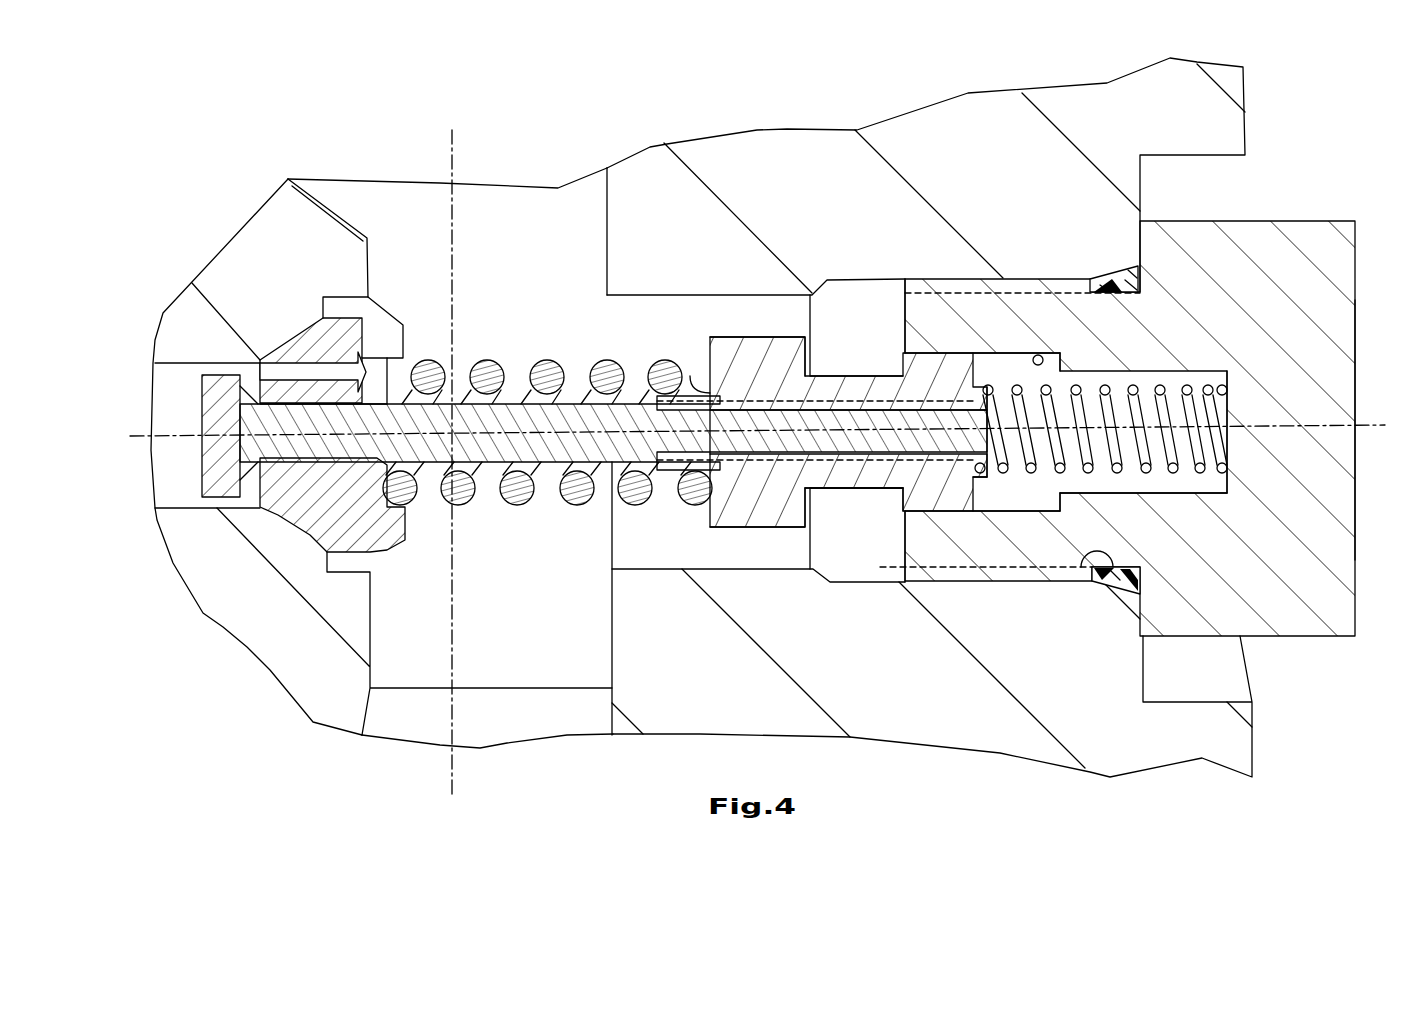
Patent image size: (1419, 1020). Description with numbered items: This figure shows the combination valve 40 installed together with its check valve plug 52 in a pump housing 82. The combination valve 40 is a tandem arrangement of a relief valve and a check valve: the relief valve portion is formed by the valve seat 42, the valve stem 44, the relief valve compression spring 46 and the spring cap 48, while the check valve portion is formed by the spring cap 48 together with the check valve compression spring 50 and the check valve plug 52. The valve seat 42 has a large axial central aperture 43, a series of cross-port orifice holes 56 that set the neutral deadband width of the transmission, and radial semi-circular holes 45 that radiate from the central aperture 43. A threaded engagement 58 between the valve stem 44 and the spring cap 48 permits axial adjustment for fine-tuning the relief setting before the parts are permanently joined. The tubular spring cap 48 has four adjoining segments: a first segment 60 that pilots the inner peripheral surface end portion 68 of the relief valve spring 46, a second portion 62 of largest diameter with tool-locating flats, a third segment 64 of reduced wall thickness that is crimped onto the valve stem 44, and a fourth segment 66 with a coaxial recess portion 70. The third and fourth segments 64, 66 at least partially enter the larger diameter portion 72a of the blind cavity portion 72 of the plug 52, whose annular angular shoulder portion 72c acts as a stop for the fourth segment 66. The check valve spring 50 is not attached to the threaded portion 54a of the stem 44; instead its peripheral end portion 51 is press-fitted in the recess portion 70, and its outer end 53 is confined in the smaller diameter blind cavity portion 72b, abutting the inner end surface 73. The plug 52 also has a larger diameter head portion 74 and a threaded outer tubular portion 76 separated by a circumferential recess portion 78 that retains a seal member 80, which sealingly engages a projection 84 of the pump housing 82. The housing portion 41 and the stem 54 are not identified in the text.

The combination valve 40 is at (737, 305).
The housing front portion 41 is at (497, 312).
The valve seat 42 is at (368, 527).
The axial central aperture 43 is at (940, 237).
The valve stem 44 is at (200, 406).
The radial semi-circular holes 45 is at (382, 343).
The relief valve compression spring 46 is at (527, 372).
The spring cap 48 is at (757, 335).
The check valve compression spring 50 is at (1192, 385).
The peripheral end portion 51 is at (988, 385).
The check valve plug 52 is at (1290, 262).
The outer end 53 is at (1232, 470).
The valve stem 54 is at (613, 431).
The threaded portion 54a is at (625, 407).
The cross-port orifice holes 56 is at (323, 370).
The threaded engagement 58 is at (752, 512).
The first segment 60 is at (663, 475).
The second portion 62 is at (783, 455).
The third segment 64 is at (840, 470).
The fourth segment 66 is at (912, 478).
The inner peripheral surface end portion 68 is at (702, 487).
The recess portion 70 is at (990, 475).
The blind cavity portion 72 is at (1042, 487).
The larger diameter portion 72a is at (1036, 357).
The smaller diameter blind cavity portion 72b is at (1195, 500).
The annular angular shoulder portion 72c is at (1047, 353).
The inner end surface 73 is at (1230, 425).
The head portion 74 is at (1317, 365).
The threaded outer tubular portion 76 is at (943, 288).
The circumferential recess portion 78 is at (1090, 556).
The seal member 80 is at (1133, 267).
The pump housing 82 is at (970, 710).
The projection 84 is at (1122, 580).